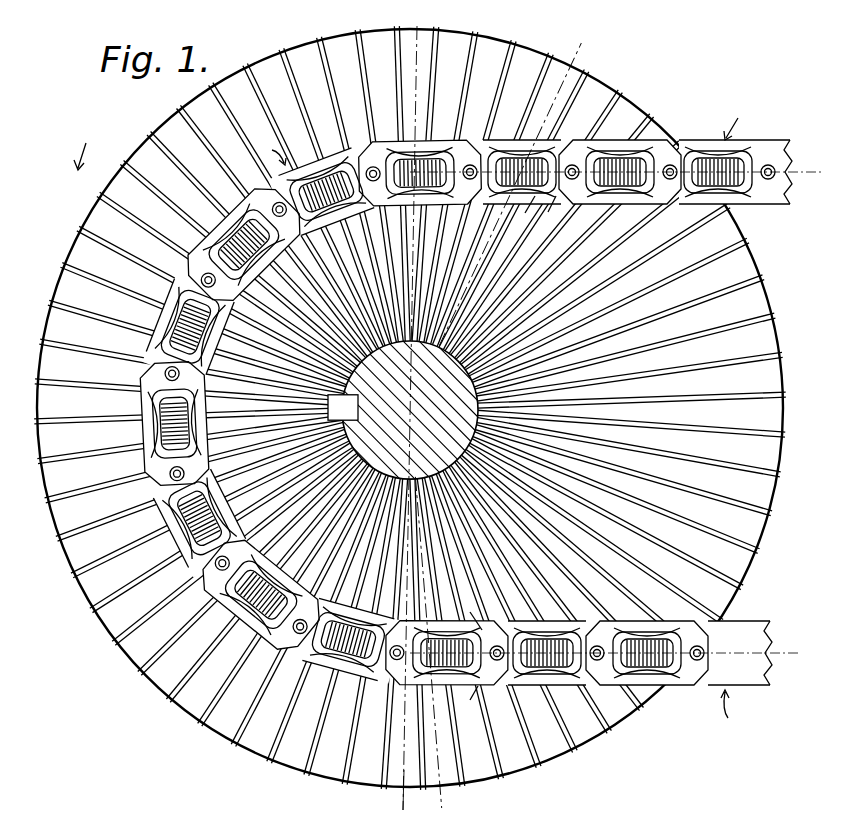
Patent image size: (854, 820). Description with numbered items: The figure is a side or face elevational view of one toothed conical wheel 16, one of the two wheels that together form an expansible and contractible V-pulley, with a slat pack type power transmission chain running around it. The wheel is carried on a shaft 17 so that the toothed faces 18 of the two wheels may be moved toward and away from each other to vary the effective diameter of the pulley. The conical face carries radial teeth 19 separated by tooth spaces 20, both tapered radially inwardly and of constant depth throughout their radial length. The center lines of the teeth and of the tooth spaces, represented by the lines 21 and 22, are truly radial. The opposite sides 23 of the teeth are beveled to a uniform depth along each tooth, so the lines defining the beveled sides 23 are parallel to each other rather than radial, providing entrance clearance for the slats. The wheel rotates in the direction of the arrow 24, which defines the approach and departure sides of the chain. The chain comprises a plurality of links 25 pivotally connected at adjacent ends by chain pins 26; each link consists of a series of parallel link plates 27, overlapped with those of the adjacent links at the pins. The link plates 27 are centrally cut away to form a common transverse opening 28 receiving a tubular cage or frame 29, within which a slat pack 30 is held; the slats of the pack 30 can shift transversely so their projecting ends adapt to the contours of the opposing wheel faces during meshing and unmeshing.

The conical wheel 16 is at (136, 672).
The shaft 17 is at (418, 419).
The toothed face 18 is at (258, 742).
The radial teeth 19 is at (410, 399).
The tooth spaces 20 is at (410, 400).
The tooth center line 21 is at (587, 53).
The tooth space center line 22 is at (448, 809).
The beveled tooth sides 23 is at (540, 80).
The arrow 24 is at (86, 146).
The chain links 25 is at (628, 208).
The chain pins 26 is at (678, 206).
The link plates 27 is at (698, 140).
The transverse opening 28 is at (640, 152).
The cage or frame 29 is at (590, 200).
The slat pack 30 is at (600, 160).